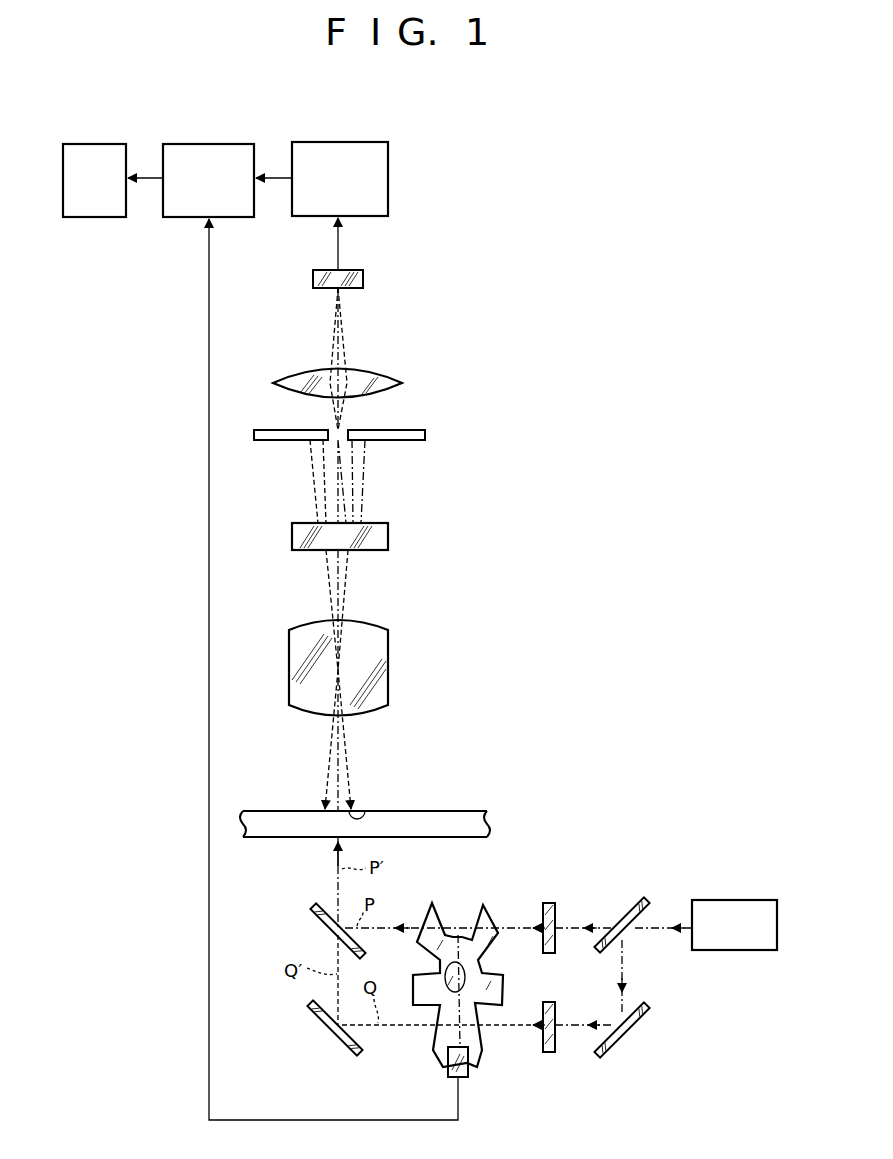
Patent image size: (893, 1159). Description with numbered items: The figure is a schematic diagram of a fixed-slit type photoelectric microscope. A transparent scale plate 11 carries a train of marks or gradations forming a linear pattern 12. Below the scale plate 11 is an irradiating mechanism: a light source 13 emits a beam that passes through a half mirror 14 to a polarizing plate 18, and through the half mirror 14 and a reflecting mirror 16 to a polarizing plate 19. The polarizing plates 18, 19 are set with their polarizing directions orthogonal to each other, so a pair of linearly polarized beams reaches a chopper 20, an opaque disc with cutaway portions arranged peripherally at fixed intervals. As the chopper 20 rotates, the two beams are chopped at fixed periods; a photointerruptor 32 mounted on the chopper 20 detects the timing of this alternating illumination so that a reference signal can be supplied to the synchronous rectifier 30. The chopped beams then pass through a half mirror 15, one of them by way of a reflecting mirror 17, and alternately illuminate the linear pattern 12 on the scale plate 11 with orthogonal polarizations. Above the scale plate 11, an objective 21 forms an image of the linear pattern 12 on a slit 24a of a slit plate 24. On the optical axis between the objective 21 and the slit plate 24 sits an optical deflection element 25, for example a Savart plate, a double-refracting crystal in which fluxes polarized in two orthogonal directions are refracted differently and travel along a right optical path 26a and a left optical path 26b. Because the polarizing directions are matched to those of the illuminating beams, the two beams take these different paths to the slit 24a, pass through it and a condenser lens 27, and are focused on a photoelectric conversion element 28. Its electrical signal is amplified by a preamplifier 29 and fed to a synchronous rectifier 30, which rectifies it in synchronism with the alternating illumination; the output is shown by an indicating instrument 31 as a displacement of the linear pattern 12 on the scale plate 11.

The scale plate 11 is at (437, 811).
The linear pattern 12 is at (364, 814).
The light source 13 is at (726, 900).
The half mirror 14 is at (630, 900).
The half mirror 15 is at (314, 916).
The reflecting mirror 16 is at (648, 1027).
The reflecting mirror 17 is at (321, 1040).
The polarizing plate 18 is at (554, 903).
The polarizing plate 19 is at (549, 1054).
The chopper 20 is at (432, 904).
The objective 21 is at (390, 668).
The slit plate 24 is at (427, 435).
The slit 24a is at (344, 430).
The optical deflection element 25 is at (390, 536).
The right optical path 26a is at (362, 478).
The left optical path 26b is at (312, 478).
The condenser lens 27 is at (380, 374).
The photoelectric conversion element 28 is at (365, 279).
The preamplifier 29 is at (339, 140).
The synchronous rectifier 30 is at (207, 142).
The indicating instrument 31 is at (90, 142).
The photointerruptor 32 is at (469, 1077).